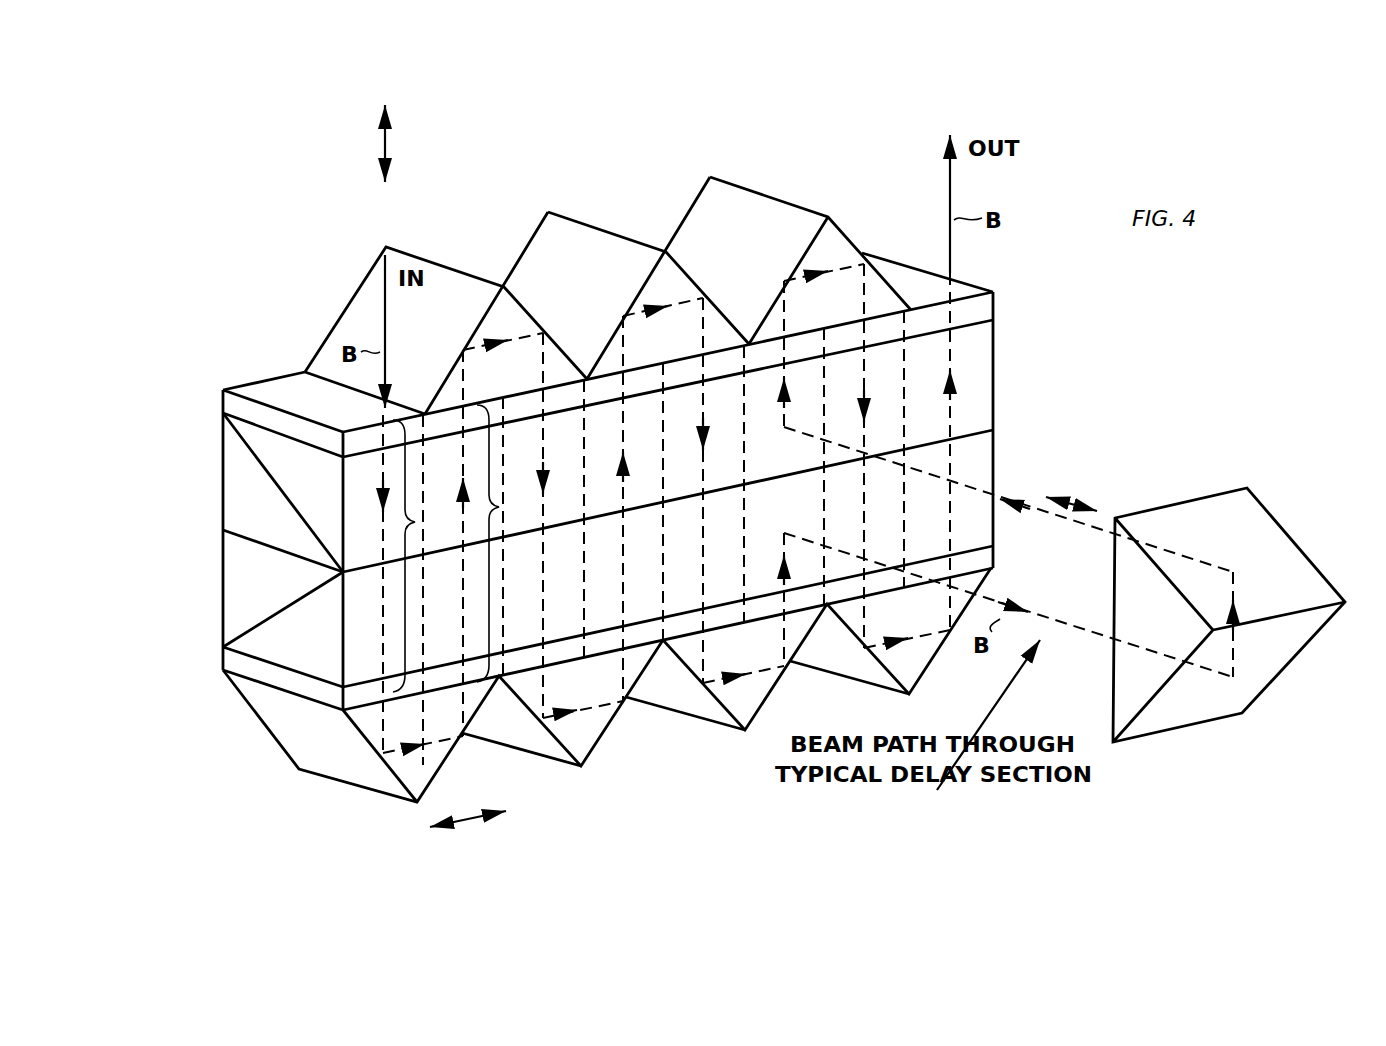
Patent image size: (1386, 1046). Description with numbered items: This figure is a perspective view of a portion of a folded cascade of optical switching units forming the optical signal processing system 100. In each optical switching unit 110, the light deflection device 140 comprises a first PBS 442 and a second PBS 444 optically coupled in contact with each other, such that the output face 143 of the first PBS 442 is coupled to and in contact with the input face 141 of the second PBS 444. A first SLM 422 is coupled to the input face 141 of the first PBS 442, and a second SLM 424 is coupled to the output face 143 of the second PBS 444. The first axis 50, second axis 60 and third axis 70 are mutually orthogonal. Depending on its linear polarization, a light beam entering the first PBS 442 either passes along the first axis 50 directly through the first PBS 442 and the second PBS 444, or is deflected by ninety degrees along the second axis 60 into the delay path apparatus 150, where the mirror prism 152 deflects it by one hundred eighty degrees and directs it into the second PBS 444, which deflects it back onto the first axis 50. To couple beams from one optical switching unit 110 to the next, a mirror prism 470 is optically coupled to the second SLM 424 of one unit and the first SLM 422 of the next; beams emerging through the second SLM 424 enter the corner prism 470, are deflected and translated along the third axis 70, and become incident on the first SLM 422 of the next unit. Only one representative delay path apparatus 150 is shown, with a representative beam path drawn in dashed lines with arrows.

The optical delay line 100 is at (189, 254).
The first axis 50 is at (378, 151).
The second axis 60 is at (1072, 495).
The third axis 70 is at (470, 808).
The optical switching unit 110 is at (477, 548).
The light deflection device 140 is at (208, 413).
The input face 141 is at (223, 391).
The output face 143 is at (252, 548).
The delay path apparatus 150 is at (1368, 523).
The mirror prism 152 is at (1297, 540).
The first SLM 422 is at (222, 411).
The second SLM 424 is at (222, 672).
The first PBS 442 is at (243, 478).
The second PBS 444 is at (243, 603).
The mirror prism 470 is at (442, 263).